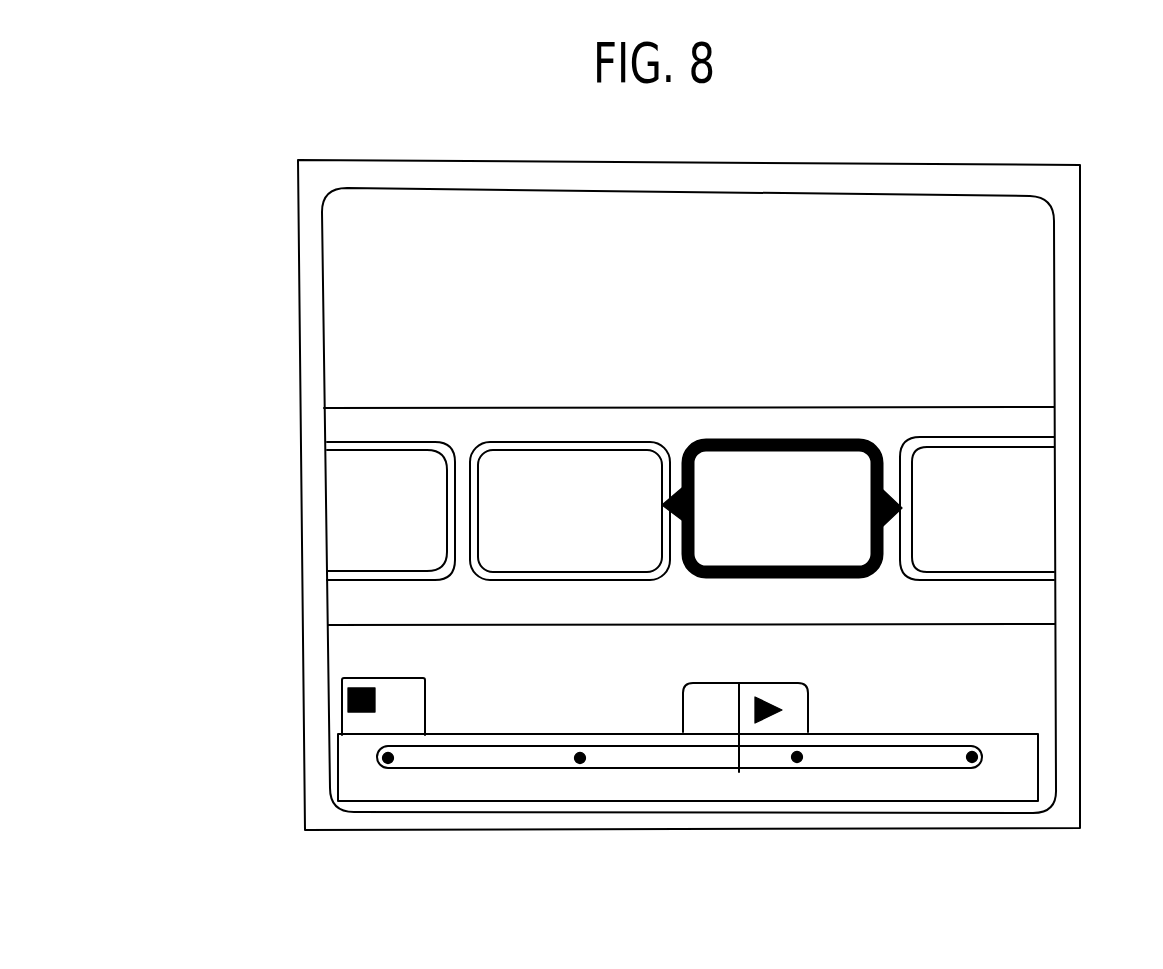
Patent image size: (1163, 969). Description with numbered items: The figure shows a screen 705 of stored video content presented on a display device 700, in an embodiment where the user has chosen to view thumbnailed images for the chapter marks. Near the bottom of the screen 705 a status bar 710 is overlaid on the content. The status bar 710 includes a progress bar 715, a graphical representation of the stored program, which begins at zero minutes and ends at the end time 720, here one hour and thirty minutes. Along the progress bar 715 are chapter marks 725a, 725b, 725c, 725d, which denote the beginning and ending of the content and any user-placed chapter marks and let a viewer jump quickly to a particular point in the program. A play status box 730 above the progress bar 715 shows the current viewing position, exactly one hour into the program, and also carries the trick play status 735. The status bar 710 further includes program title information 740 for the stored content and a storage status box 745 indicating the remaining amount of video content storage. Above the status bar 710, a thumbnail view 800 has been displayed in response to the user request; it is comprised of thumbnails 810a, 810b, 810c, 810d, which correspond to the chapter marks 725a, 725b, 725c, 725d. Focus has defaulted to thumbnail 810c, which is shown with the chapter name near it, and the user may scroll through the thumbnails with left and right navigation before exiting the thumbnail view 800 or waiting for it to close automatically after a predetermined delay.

The display device 700 is at (310, 157).
The screen 705 is at (333, 218).
The status bar 710 is at (340, 780).
The progress bar 715 is at (660, 775).
The end time 720 is at (1035, 748).
The chapter mark 725a is at (388, 758).
The chapter mark 725b is at (580, 755).
The chapter mark 725c is at (797, 757).
The chapter mark 725d is at (972, 757).
The play status box 730 is at (698, 683).
The trick play status 735 is at (762, 690).
The program title information 740 is at (425, 795).
The storage status box 745 is at (352, 680).
The thumbnail view 800 is at (358, 410).
The thumbnail 810a is at (372, 560).
The thumbnail 810b is at (525, 558).
The thumbnail 810c is at (737, 557).
The thumbnail 810d is at (940, 560).